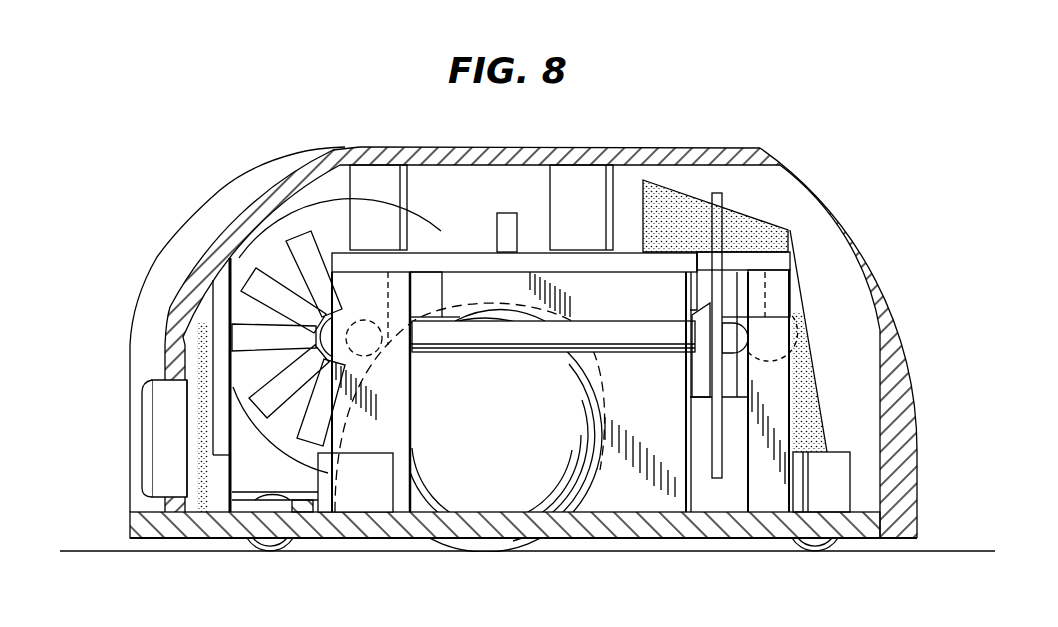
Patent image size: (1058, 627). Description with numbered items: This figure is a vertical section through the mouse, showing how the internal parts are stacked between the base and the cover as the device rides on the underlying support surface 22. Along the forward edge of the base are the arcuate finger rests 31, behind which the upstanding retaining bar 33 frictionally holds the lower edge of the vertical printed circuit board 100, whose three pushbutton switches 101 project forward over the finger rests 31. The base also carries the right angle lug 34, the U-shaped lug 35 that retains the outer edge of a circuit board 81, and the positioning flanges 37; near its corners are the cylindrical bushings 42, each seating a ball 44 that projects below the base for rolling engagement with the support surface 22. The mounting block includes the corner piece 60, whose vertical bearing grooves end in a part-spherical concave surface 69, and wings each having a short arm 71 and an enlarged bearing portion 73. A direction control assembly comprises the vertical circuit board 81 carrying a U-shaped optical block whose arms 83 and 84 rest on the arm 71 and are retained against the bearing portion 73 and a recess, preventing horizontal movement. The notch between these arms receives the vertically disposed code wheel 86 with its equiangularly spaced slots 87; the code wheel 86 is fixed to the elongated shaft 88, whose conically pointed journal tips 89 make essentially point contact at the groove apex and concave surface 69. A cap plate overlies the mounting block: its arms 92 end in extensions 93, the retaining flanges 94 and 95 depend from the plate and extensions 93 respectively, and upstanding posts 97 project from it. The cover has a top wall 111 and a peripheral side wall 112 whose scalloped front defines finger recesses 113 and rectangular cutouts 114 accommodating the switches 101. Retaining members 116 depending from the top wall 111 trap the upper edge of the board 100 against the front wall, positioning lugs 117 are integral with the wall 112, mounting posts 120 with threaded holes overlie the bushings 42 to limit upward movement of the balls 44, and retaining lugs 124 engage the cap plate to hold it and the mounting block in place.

The support surface 22 is at (108, 548).
The finger rests 31 is at (162, 507).
The retaining bar 33 is at (222, 503).
The right angle lug 34 is at (367, 503).
The U-shaped lug 35 is at (835, 500).
The positioning flanges 37 is at (795, 500).
The bushings 42 is at (247, 507).
The balls 44 is at (812, 547).
The corner piece 60 is at (400, 432).
The part-spherical concave surface 69 is at (408, 371).
The arm 71 is at (708, 500).
The bearing portion 73 is at (765, 500).
The printed circuit board 81 is at (762, 236).
The arm 83 is at (692, 386).
The arm 84 is at (737, 380).
The code wheel 86 is at (323, 213).
The slots 87 is at (265, 263).
The shaft 88 is at (530, 352).
The journal tips 89 is at (792, 309).
The arms 92 is at (727, 257).
The extension 93 is at (783, 262).
The retaining flanges 94 is at (453, 291).
The retaining flanges 95 is at (744, 293).
The posts 97 is at (495, 223).
The printed circuit board 100 is at (200, 340).
The pushbutton switches 101 is at (160, 440).
The top wall 111 is at (683, 152).
The peripheral side wall 112 is at (895, 316).
The finger recesses 113 is at (178, 253).
The cutouts 114 is at (190, 386).
The retaining members 116 is at (218, 300).
The positioning lugs 117 is at (878, 430).
The mounting posts 120 is at (322, 492).
The retaining lugs 124 is at (381, 182).